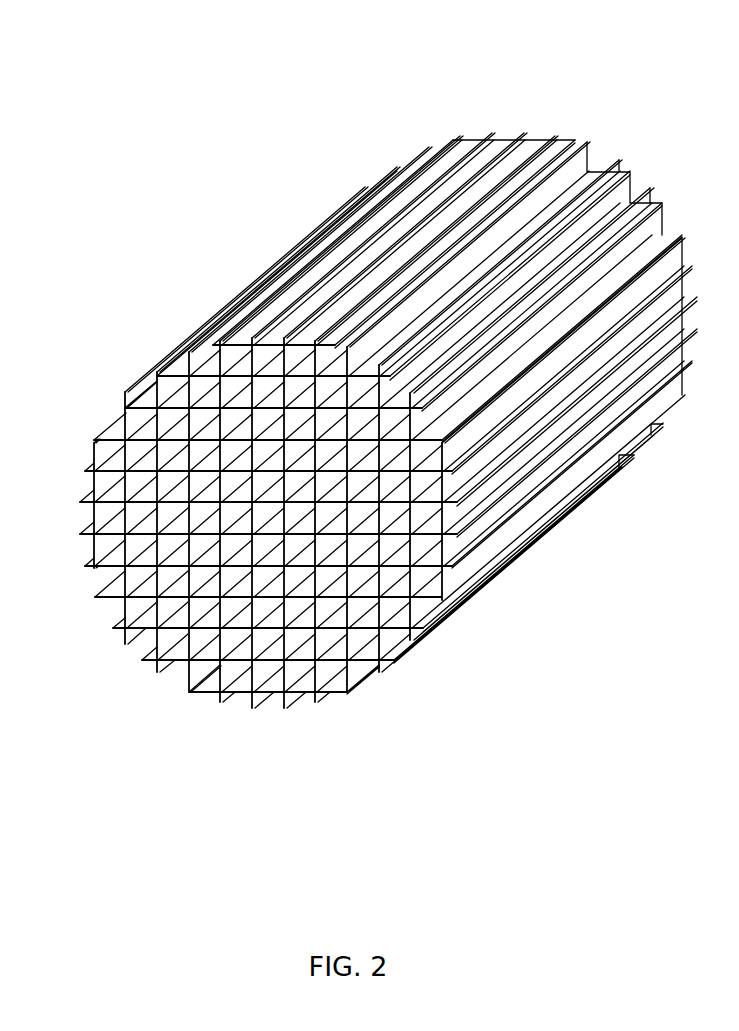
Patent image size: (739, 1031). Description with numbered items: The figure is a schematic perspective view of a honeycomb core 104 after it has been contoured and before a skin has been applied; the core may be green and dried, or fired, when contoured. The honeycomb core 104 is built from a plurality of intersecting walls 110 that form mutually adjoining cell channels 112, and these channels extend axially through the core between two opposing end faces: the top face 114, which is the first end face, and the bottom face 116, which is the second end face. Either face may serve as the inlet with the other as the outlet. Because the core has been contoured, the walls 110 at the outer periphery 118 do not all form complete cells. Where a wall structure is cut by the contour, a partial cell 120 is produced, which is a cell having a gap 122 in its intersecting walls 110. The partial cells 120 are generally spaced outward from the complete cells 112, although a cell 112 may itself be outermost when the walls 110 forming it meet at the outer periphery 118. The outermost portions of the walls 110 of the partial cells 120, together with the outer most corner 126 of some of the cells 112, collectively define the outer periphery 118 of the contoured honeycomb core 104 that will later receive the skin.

The honeycomb core 104 is at (321, 34).
The intersecting walls 110 is at (180, 388).
The cell channels 112 is at (142, 413).
The top face 114 is at (372, 653).
The bottom face 116 is at (674, 183).
The outer periphery 118 is at (336, 210).
The partial cells 120 is at (137, 647).
The gap 122 is at (180, 686).
The outer most corner 126 is at (152, 372).